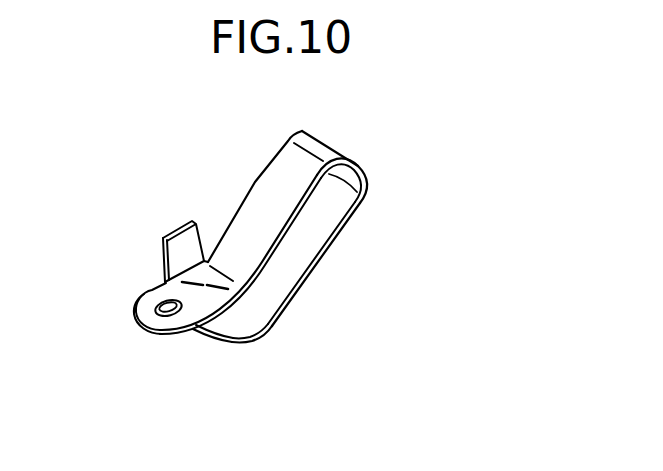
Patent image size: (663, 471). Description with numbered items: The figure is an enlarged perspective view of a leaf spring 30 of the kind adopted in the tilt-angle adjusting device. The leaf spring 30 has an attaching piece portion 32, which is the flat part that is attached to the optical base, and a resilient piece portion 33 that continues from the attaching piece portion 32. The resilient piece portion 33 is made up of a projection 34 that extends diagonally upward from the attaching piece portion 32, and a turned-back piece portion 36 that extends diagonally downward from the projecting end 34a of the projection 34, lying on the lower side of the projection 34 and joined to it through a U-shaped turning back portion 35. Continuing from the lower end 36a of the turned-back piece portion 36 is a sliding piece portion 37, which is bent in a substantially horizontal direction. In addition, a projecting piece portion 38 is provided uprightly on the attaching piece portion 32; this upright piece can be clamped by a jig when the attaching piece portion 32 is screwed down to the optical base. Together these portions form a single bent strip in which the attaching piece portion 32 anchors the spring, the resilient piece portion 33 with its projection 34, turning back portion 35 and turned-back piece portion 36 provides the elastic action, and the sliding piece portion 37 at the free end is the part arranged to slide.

The leaf spring 30 is at (382, 166).
The attaching piece portion 32 is at (138, 318).
The resilient piece portion 33 is at (346, 226).
The projection 34 is at (254, 183).
The projecting end 34a is at (294, 153).
The U-shaped turning back portion 35 is at (337, 142).
The turned-back piece portion 36 is at (295, 268).
The lower end 36a is at (247, 311).
The sliding piece portion 37 is at (213, 332).
The projecting piece portion 38 is at (162, 242).